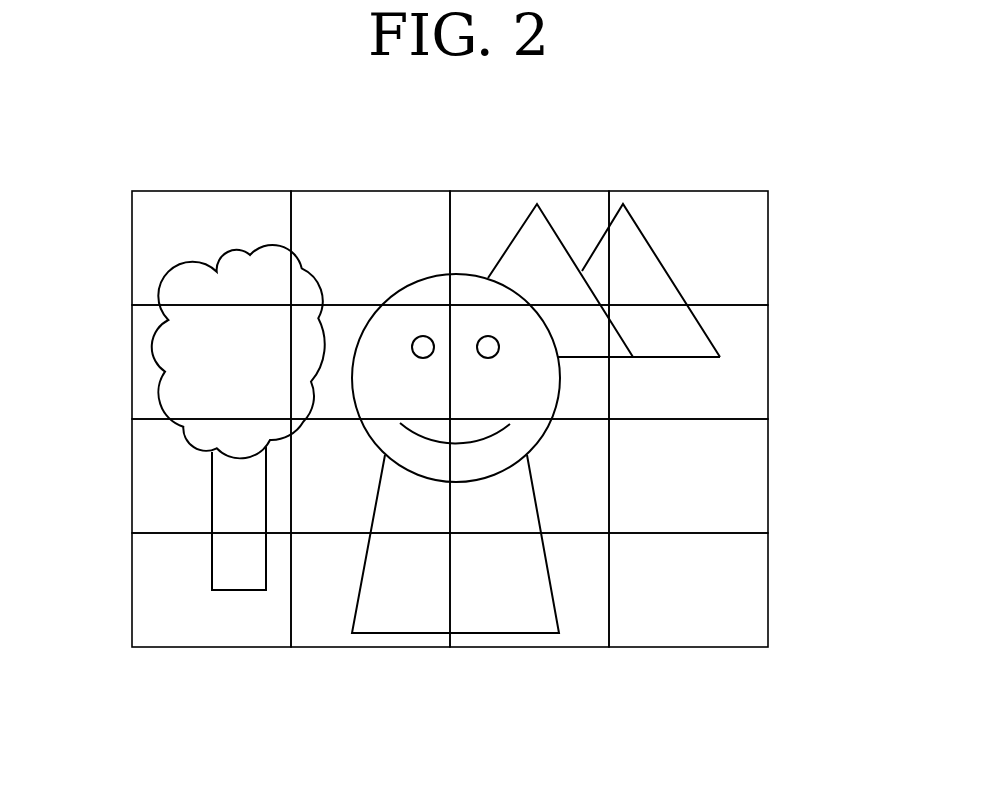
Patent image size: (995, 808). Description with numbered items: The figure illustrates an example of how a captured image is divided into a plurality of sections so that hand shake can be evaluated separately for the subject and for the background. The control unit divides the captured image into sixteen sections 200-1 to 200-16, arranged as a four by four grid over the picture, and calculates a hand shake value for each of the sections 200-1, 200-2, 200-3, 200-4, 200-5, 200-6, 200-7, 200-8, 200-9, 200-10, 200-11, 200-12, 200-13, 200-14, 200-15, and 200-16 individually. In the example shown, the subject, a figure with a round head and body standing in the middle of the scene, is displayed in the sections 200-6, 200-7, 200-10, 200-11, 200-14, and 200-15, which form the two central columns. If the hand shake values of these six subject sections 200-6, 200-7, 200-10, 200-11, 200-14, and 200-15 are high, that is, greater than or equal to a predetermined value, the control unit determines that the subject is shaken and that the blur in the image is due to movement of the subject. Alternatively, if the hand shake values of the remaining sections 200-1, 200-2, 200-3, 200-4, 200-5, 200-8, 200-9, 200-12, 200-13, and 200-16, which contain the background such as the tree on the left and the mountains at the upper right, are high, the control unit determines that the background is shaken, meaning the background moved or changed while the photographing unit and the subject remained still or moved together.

The section 200-1 is at (208, 200).
The section 200-2 is at (367, 198).
The section 200-3 is at (527, 198).
The section 200-4 is at (690, 198).
The section 200-5 is at (142, 336).
The section 200-6 is at (302, 363).
The section 200-7 is at (598, 332).
The section 200-8 is at (760, 383).
The section 200-9 is at (142, 444).
The section 200-10 is at (310, 505).
The section 200-11 is at (596, 458).
The section 200-12 is at (760, 505).
The section 200-13 is at (208, 638).
The section 200-14 is at (367, 637).
The section 200-15 is at (527, 637).
The section 200-16 is at (690, 637).